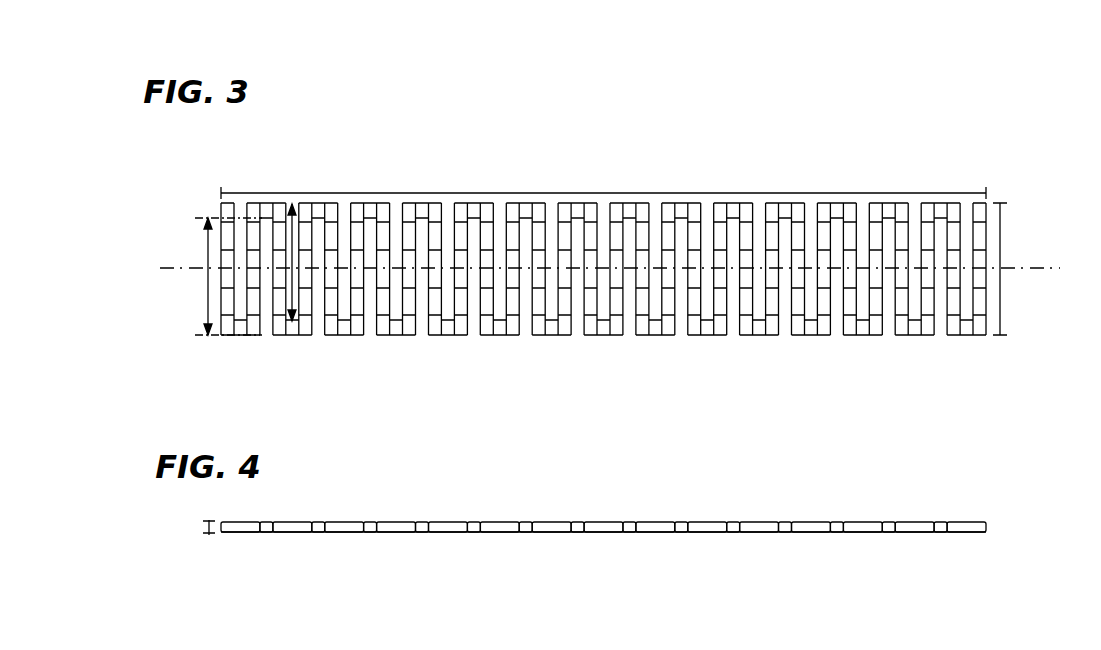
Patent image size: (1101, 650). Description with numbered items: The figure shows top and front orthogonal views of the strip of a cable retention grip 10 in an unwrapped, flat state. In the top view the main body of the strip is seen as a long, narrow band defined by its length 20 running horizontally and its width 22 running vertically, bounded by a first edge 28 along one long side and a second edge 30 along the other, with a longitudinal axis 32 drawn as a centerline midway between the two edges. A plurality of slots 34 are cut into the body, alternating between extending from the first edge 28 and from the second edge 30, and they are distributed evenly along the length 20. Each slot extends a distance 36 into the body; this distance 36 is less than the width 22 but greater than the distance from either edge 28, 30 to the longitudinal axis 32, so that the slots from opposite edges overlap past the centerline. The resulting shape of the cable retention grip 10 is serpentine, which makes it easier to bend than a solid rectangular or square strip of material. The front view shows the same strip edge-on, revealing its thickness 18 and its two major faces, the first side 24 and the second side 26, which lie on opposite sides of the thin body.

In FIG. 3, the cable retention grip 10 is at (630, 265).
In FIG. 4, the cable retention grip 10 is at (624, 529).
In FIG. 4, the thickness 18 is at (203, 529).
In FIG. 3, the length 20 is at (805, 192).
In FIG. 3, the width 22 is at (1003, 284).
In FIG. 4, the first side 24 is at (760, 521).
In FIG. 4, the second side 26 is at (550, 534).
In FIG. 3, the first edge 28 is at (758, 336).
In FIG. 3, the second edge 30 is at (425, 204).
In FIG. 3, the longitudinal axis 32 is at (1040, 267).
In FIG. 3, the slots 34 is at (710, 215).
In FIG. 3, the distance 36 is at (291, 240).